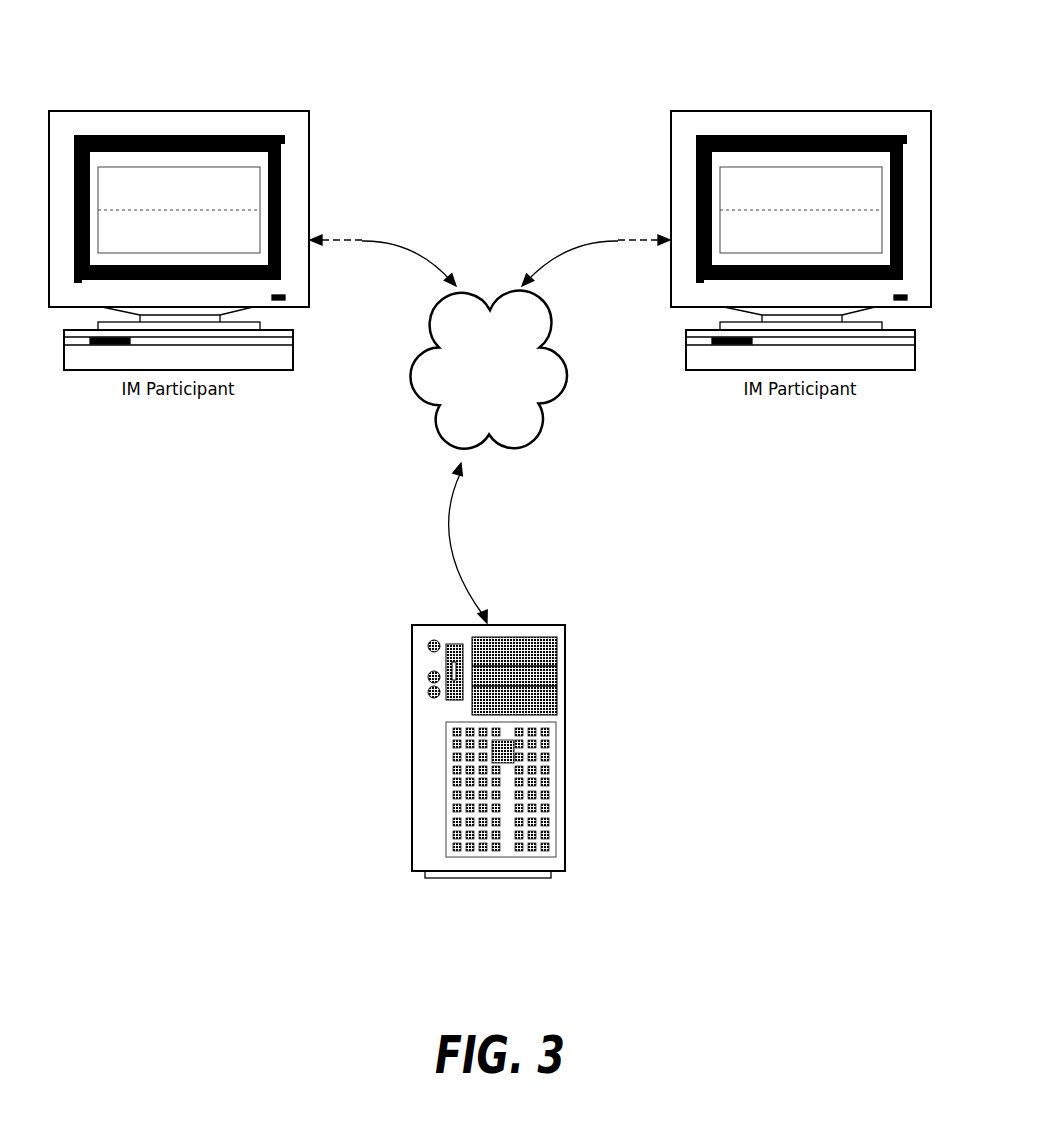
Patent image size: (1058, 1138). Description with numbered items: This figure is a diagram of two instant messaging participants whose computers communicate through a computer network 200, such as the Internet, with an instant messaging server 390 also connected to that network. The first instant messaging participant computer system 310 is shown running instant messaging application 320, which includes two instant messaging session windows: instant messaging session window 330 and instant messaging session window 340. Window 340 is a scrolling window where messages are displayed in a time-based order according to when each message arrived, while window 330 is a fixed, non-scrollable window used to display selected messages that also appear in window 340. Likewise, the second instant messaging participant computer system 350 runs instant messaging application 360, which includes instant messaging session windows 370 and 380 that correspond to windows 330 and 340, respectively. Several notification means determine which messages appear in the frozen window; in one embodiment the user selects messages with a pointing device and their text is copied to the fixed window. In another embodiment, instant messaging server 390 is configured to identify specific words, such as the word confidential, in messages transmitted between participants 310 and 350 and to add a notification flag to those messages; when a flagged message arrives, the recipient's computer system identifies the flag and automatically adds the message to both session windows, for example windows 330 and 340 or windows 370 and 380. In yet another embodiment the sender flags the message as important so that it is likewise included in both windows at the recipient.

The computer network 200 is at (489, 370).
The first instant messaging participant computer system 310 is at (179, 213).
The instant messaging application 320 is at (267, 145).
The instant messaging session window 330 is at (256, 158).
The instant messaging session window 340 is at (253, 202).
The instant messaging participant computer system 350 is at (811, 213).
The instant messaging application 360 is at (717, 145).
The instant messaging session window 370 is at (720, 156).
The instant messaging session window 380 is at (723, 200).
The instant messaging server 390 is at (511, 764).